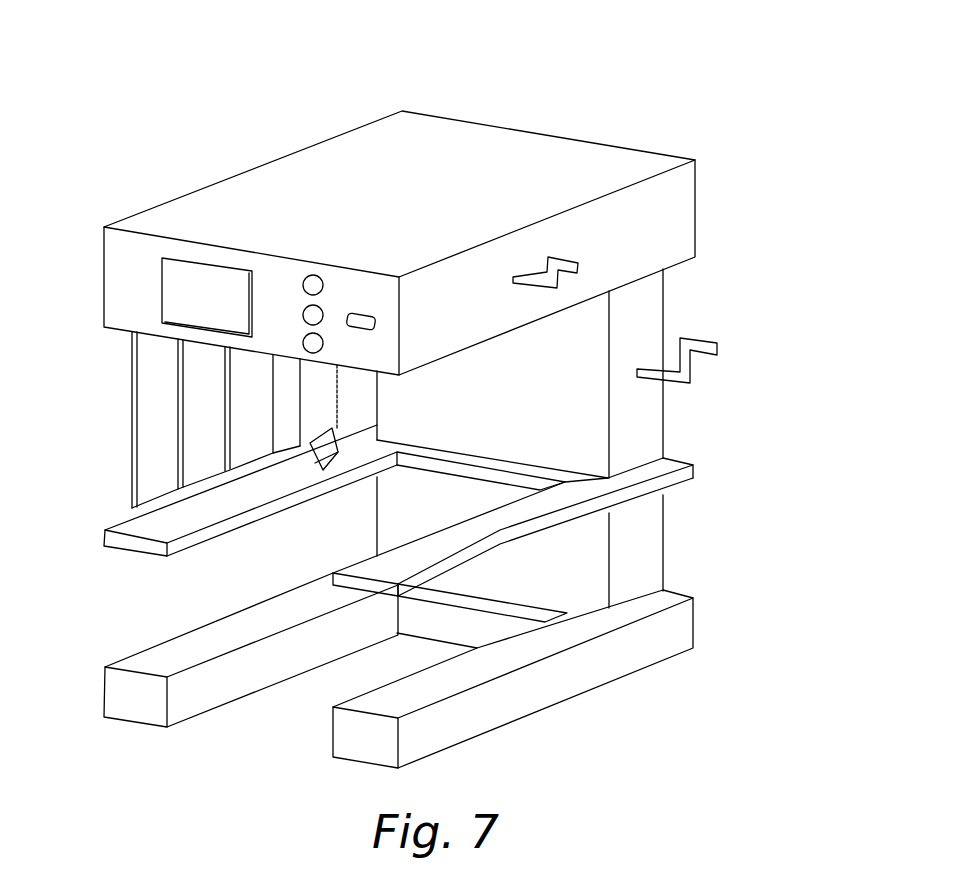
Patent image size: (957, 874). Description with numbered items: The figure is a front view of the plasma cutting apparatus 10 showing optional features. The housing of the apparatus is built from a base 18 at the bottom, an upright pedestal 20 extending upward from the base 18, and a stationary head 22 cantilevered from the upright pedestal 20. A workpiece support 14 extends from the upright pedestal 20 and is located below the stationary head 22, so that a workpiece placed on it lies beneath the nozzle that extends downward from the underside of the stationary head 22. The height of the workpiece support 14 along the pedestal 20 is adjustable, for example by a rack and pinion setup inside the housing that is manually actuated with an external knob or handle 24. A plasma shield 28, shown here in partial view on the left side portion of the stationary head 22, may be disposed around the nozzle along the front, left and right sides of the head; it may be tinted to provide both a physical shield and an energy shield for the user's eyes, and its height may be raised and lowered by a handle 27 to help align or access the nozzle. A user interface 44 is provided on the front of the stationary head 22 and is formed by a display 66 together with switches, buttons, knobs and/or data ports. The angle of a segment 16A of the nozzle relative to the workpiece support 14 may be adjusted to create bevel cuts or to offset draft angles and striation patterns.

The plasma cutting apparatus 10 is at (602, 37).
The stationary head 22 is at (613, 168).
The display 66 is at (197, 275).
The user interface 44 is at (275, 257).
The handle 27 is at (570, 258).
The external knob or handle 24 is at (708, 340).
The upright pedestal 20 is at (650, 427).
The plasma shield 28 is at (130, 434).
The workpiece support 14 is at (104, 546).
The base 18 is at (586, 673).
The segment of the nozzle 16A is at (320, 455).